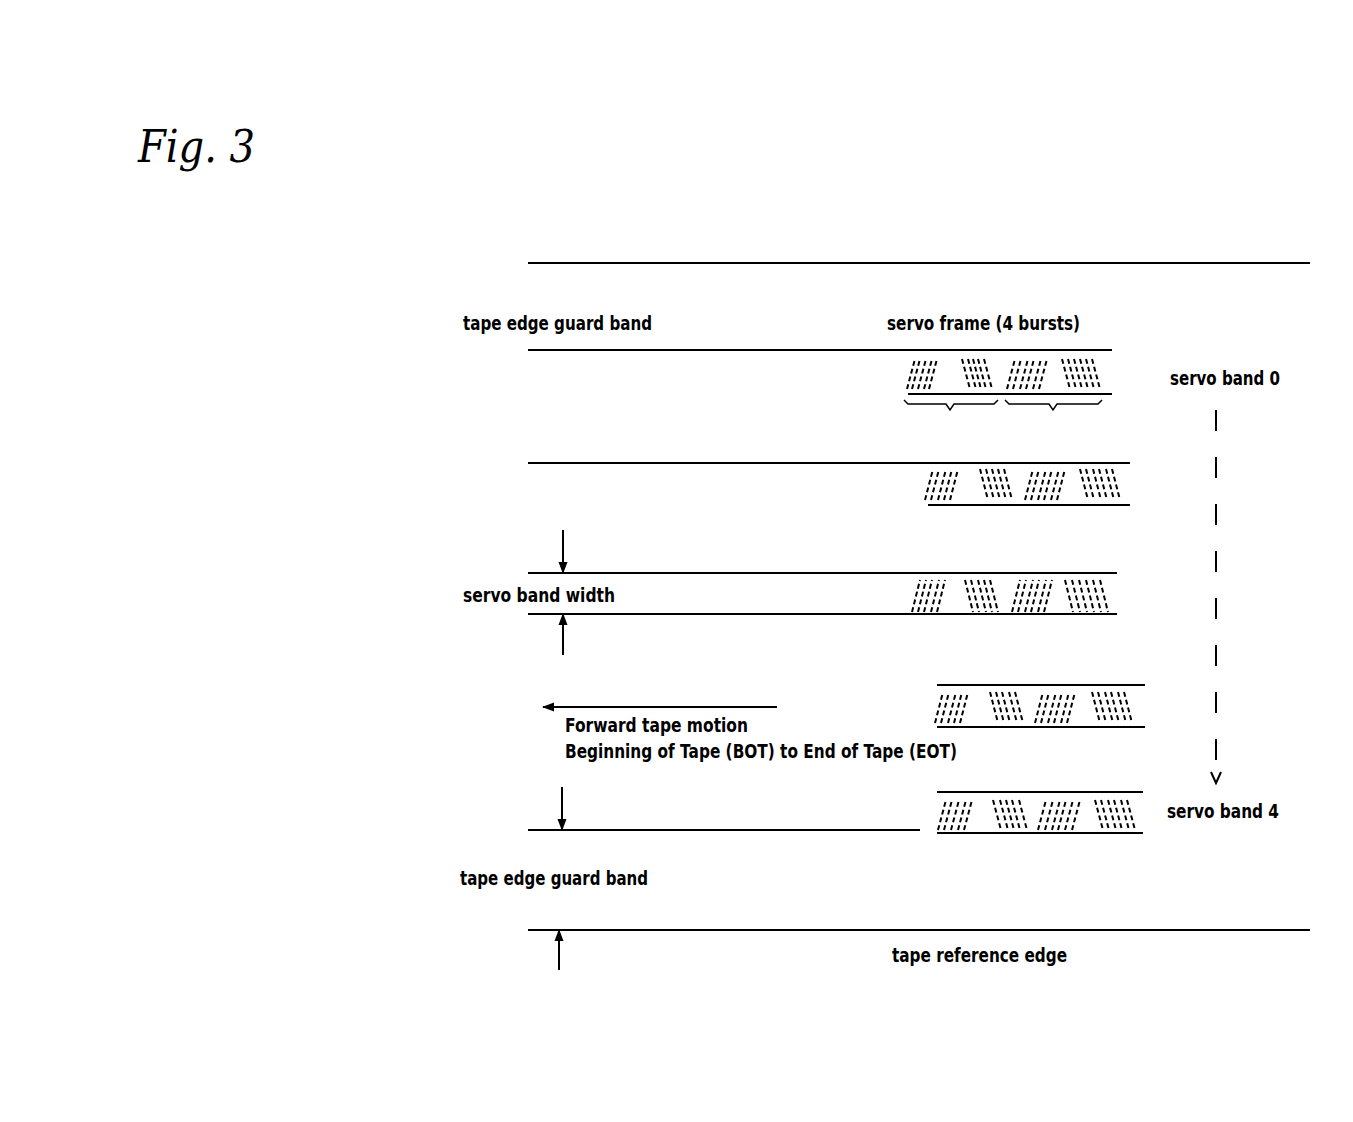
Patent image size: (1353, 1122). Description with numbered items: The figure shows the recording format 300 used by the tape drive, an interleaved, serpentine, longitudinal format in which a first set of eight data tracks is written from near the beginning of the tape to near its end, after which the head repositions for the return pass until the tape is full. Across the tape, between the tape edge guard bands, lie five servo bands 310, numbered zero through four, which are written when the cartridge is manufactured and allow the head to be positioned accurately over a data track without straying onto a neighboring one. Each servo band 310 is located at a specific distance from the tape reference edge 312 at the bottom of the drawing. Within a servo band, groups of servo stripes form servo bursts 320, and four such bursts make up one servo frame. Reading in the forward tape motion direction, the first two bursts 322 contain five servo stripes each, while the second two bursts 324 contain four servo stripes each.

The recording format 300 is at (368, 282).
The servo bands 310 is at (1115, 367).
The tape reference edge 312 is at (887, 968).
The servo bursts 320 is at (1026, 360).
The first two bursts 322 is at (1053, 401).
The second two bursts 324 is at (951, 399).